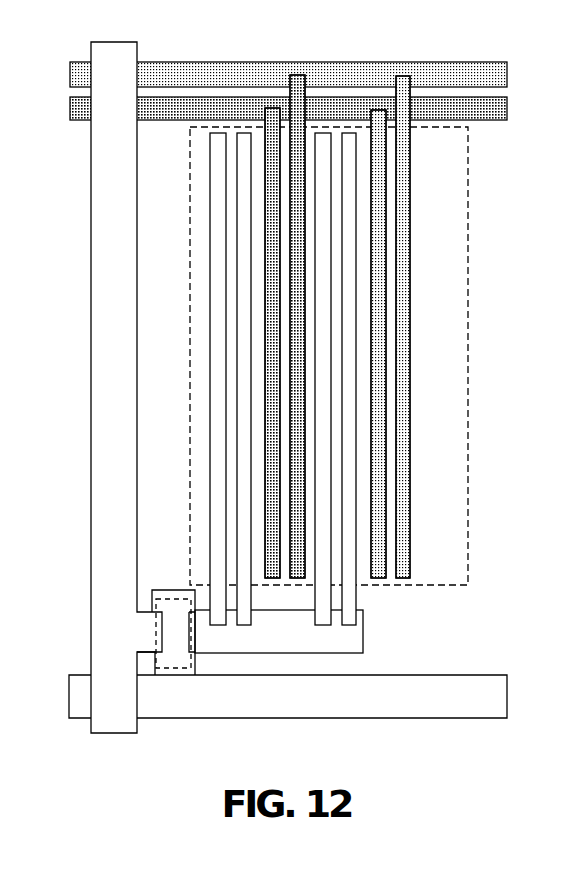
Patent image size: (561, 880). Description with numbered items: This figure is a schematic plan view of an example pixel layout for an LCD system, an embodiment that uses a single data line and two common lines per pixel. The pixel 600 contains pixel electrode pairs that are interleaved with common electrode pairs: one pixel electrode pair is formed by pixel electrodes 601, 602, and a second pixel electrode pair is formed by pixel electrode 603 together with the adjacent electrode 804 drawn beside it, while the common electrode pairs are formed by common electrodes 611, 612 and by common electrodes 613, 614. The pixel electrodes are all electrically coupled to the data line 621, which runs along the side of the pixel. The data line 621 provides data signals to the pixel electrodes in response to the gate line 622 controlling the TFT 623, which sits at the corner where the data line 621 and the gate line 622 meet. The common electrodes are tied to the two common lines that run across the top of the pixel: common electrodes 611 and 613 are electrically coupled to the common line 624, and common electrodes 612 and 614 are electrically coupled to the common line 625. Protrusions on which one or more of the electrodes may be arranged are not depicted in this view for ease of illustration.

The pixel 600 is at (454, 561).
The pixel electrode 601 is at (210, 205).
The pixel electrode 602 is at (243, 291).
The pixel electrode 603 is at (340, 203).
The fourth electrode finger 804 is at (353, 287).
The common electrode 611 is at (265, 378).
The common electrode 612 is at (288, 467).
The common electrode 613 is at (380, 378).
The common electrode 614 is at (410, 457).
The data line 621 is at (136, 542).
The gate line 622 is at (393, 675).
The TFT 623 is at (170, 672).
The common line 624 is at (203, 102).
The common line 625 is at (358, 62).